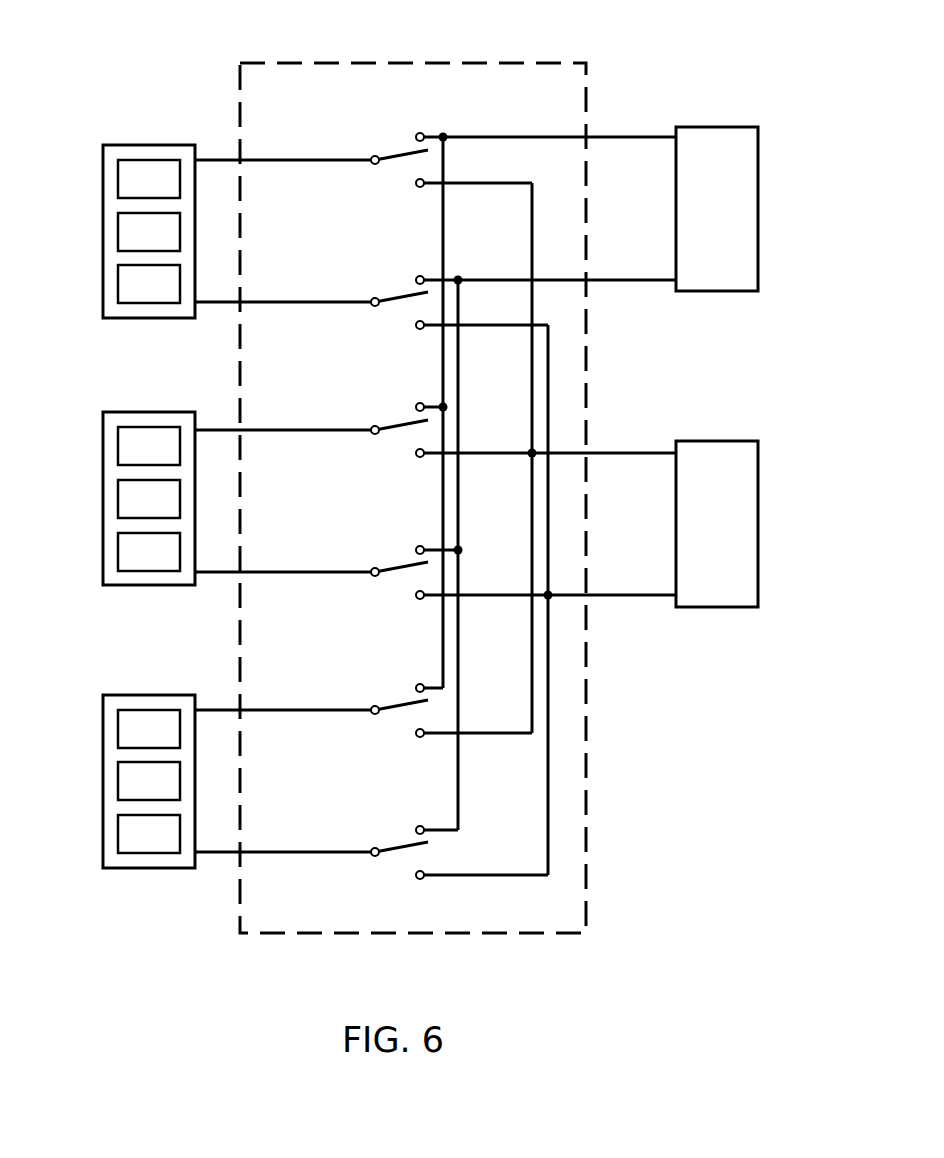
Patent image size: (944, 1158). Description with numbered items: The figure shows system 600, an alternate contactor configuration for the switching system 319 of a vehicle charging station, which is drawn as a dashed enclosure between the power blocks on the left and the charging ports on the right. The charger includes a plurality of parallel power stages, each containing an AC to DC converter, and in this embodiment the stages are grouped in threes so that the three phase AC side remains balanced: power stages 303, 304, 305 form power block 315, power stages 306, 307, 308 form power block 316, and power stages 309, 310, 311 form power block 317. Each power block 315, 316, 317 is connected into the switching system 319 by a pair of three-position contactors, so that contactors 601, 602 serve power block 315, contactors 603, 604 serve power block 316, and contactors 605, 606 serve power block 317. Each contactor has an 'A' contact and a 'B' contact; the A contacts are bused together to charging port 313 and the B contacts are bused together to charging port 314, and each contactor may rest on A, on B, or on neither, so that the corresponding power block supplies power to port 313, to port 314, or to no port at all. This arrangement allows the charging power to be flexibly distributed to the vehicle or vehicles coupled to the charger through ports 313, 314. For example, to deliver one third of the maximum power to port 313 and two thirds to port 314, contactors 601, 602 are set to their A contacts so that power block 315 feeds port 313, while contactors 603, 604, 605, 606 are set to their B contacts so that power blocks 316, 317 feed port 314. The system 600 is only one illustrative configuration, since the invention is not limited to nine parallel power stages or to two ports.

The system 600 is at (666, 805).
The switching system 319 is at (480, 65).
The power block 315 is at (126, 204).
The power block 316 is at (126, 473).
The power block 317 is at (126, 755).
The power stage 303 is at (130, 192).
The power stage 304 is at (130, 245).
The power stage 305 is at (130, 297).
The power stage 306 is at (130, 459).
The power stage 307 is at (130, 512).
The power stage 308 is at (130, 565).
The power stage 309 is at (130, 742).
The power stage 310 is at (130, 794).
The power stage 311 is at (130, 847).
The charging port 313 is at (760, 183).
The charging port 314 is at (760, 482).
The contactor 601 is at (400, 146).
The contactor 602 is at (400, 289).
The contactor 603 is at (400, 416).
The contactor 604 is at (400, 559).
The contactor 605 is at (400, 697).
The contactor 606 is at (400, 839).